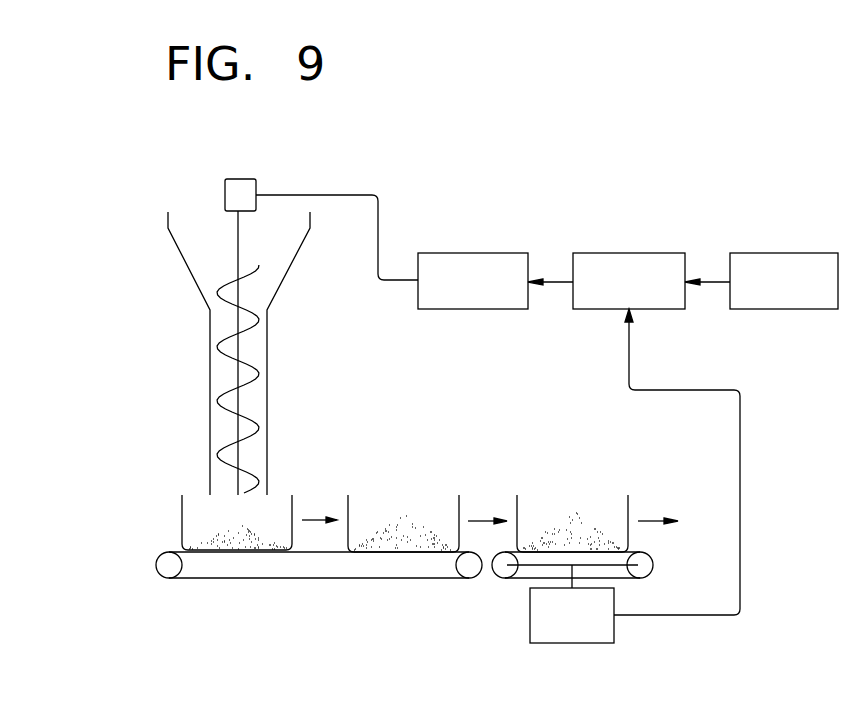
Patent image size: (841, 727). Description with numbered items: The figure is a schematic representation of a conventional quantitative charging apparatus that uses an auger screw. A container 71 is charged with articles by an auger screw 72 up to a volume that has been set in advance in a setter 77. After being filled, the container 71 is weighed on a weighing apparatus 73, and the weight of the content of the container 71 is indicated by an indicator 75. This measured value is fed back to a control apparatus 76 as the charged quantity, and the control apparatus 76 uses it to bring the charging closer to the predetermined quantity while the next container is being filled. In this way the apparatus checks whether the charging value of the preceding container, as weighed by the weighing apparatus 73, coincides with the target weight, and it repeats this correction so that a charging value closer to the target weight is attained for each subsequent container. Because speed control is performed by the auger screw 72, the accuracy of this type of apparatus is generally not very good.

The container 71 is at (181, 522).
The auger screw 72 is at (183, 398).
The weighing apparatus 73 is at (530, 605).
The indicator 75 is at (590, 253).
The control apparatus 76 is at (435, 253).
The setter 77 is at (747, 253).